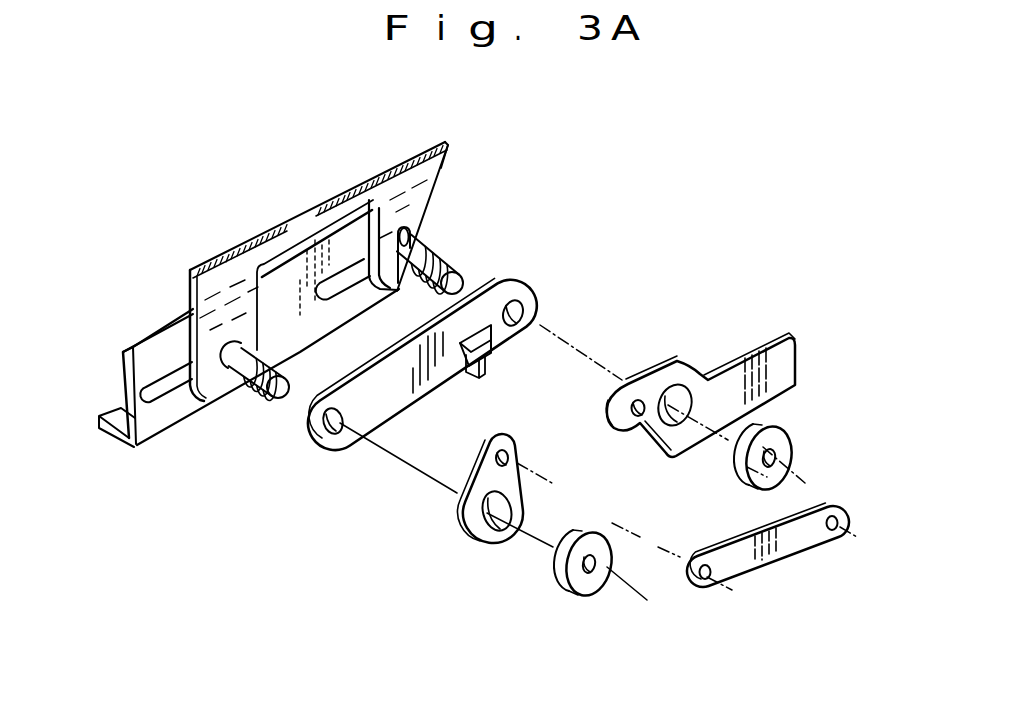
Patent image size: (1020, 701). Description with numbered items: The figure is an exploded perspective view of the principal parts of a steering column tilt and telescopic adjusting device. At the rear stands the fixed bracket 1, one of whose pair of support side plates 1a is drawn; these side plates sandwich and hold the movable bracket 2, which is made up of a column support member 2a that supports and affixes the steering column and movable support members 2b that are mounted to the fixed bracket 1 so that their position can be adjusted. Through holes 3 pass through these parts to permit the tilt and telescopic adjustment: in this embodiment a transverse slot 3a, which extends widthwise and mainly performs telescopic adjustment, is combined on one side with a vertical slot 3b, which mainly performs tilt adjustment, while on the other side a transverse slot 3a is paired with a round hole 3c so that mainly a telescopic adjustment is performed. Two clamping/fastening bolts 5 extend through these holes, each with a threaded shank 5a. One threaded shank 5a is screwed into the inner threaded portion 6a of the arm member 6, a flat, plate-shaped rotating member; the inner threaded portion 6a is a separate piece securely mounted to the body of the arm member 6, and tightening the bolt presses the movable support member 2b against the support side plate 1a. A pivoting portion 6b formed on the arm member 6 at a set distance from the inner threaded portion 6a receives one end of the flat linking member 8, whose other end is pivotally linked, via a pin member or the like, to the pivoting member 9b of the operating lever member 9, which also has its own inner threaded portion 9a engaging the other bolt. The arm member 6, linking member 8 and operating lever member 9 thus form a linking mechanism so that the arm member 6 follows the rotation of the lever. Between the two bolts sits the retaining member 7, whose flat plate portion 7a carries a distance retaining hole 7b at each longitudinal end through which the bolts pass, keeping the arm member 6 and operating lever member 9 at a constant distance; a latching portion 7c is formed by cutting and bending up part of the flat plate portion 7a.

The fixed bracket 1 is at (411, 139).
The support side plate 1a is at (440, 186).
The movable bracket 2 is at (149, 320).
The column support member 2a is at (104, 432).
The movable support member 2b is at (124, 372).
The through hole 3 is at (384, 287).
The transverse slot 3a is at (177, 398).
The vertical slot 3b is at (412, 235).
The round hole 3c is at (262, 364).
The clamping/fastening bolt 5 is at (460, 263).
The threaded shank 5a is at (432, 267).
The arm member 6 is at (523, 480).
The inner threaded portion 6a is at (597, 573).
The pivoting portion 6b is at (515, 462).
The retaining member 7 is at (542, 268).
The flat plate portion 7a is at (407, 397).
The distance retaining hole 7b is at (525, 319).
The latching portion 7c is at (488, 366).
The linking member 8 is at (743, 557).
The operating lever member 9 is at (737, 362).
The inner threaded portion 9a is at (789, 437).
The pivoting member 9b is at (641, 404).